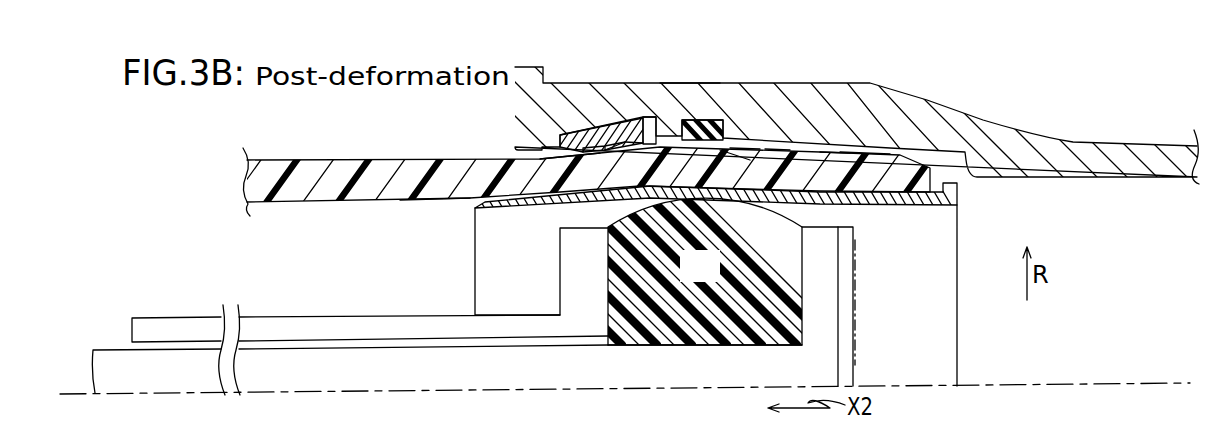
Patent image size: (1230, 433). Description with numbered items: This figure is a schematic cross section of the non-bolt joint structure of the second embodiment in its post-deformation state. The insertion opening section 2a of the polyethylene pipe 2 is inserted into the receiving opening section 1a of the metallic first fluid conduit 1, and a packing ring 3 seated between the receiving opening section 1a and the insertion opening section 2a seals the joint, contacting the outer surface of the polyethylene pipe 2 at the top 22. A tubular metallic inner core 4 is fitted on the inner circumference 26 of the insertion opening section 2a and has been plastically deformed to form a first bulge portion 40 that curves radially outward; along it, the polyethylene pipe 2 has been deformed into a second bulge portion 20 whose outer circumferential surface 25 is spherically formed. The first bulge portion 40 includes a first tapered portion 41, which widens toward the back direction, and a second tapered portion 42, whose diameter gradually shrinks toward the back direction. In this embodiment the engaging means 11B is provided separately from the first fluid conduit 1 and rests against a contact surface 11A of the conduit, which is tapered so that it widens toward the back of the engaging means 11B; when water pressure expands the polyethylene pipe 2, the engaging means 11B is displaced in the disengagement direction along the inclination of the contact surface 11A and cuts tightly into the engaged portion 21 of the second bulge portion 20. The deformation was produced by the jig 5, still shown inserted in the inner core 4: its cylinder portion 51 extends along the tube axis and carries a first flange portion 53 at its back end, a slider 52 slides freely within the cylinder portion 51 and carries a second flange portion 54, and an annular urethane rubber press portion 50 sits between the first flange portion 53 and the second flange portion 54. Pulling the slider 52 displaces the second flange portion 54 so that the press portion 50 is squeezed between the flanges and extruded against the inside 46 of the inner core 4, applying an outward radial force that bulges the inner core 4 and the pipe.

The first fluid conduit 1 is at (947, 93).
The receiving opening section 1a is at (680, 83).
The polyethylene pipe 2 is at (335, 163).
The insertion opening section 2a is at (863, 147).
The packing ring 3 is at (740, 147).
The inner core 4 is at (935, 206).
The jig 5 is at (864, 323).
The contact surface 11A is at (570, 135).
The engaging means 11B is at (602, 131).
The second bulge portion 20 is at (737, 160).
The engaged portion 21 is at (545, 160).
The top 22 is at (685, 203).
The outer circumferential surface 25 is at (700, 120).
The inner circumference 26 is at (433, 202).
The first bulge portion 40 is at (773, 147).
The first tapered portion 41 is at (654, 145).
The second tapered portion 42 is at (836, 150).
The inside 46 is at (610, 208).
The press portion 50 is at (710, 330).
The cylinder portion 51 is at (318, 317).
The slider 52 is at (318, 377).
The first flange portion 53 is at (573, 283).
The second flange portion 54 is at (840, 247).